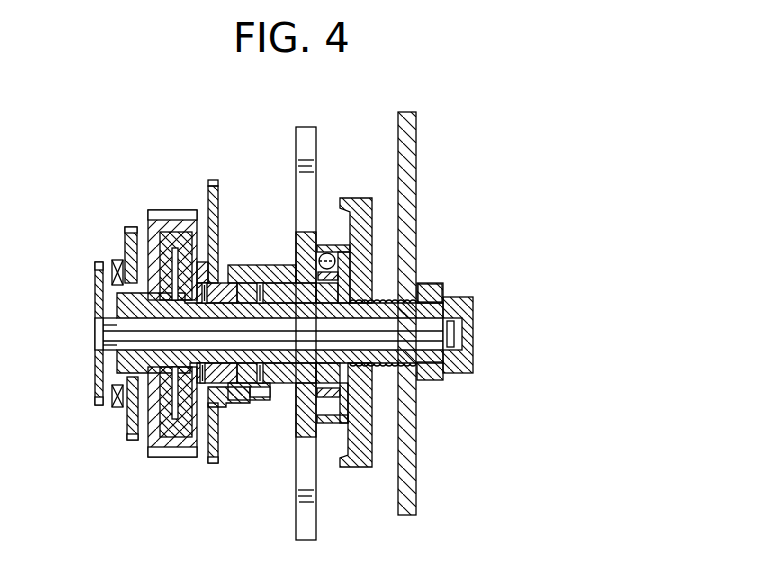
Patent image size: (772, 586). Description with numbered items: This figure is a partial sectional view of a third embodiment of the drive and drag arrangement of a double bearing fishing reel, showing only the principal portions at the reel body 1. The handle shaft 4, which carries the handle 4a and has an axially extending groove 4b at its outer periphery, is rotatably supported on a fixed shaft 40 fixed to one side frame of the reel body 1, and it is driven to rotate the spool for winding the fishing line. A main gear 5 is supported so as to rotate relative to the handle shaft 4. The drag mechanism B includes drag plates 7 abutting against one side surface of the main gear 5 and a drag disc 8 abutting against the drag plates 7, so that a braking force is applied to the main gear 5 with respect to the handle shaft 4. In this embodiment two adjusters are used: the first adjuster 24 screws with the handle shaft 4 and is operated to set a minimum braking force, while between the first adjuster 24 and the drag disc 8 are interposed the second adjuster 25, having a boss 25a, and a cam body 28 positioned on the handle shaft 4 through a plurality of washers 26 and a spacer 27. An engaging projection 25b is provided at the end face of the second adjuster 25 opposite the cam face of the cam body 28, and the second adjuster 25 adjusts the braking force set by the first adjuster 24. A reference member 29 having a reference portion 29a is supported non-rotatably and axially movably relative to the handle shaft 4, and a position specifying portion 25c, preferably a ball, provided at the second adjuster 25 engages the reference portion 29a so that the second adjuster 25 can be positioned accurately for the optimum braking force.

The reel body 1 is at (218, 196).
The handle shaft 4 is at (438, 312).
The handle 4a is at (412, 158).
The groove 4b is at (416, 275).
The main gear 5 is at (155, 212).
The drag plates 7 is at (172, 232).
The drag disc 8 is at (222, 240).
The drag mechanism B is at (201, 270).
The first adjuster 24 is at (370, 223).
The second adjuster 25 is at (315, 150).
The boss 25a is at (283, 387).
The engaging projection 25b is at (272, 281).
The position specifying portion 25c is at (345, 270).
The washers 26 is at (204, 388).
The spacer 27 is at (233, 403).
The cam body 28 is at (238, 283).
The reference member 29 is at (348, 288).
The reference portion 29a is at (325, 253).
The fixed shaft 40 is at (440, 328).